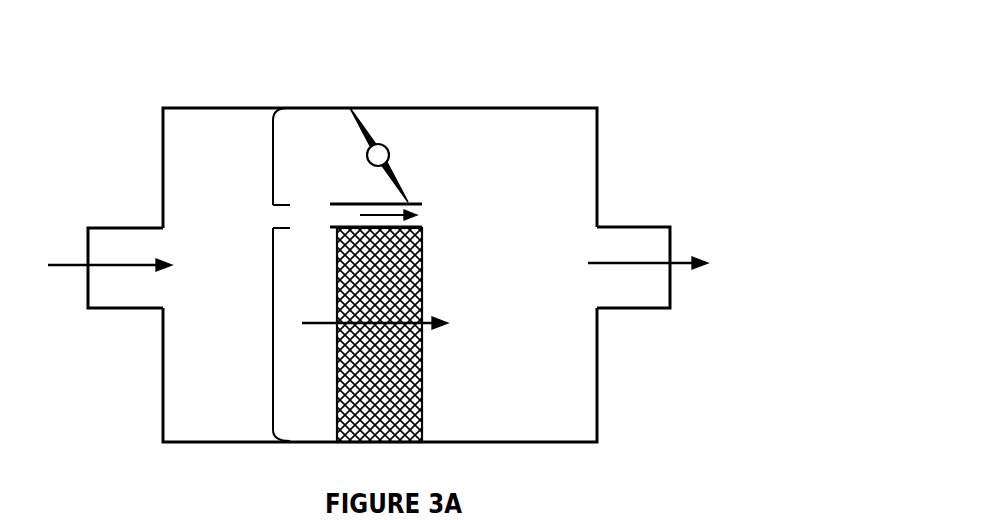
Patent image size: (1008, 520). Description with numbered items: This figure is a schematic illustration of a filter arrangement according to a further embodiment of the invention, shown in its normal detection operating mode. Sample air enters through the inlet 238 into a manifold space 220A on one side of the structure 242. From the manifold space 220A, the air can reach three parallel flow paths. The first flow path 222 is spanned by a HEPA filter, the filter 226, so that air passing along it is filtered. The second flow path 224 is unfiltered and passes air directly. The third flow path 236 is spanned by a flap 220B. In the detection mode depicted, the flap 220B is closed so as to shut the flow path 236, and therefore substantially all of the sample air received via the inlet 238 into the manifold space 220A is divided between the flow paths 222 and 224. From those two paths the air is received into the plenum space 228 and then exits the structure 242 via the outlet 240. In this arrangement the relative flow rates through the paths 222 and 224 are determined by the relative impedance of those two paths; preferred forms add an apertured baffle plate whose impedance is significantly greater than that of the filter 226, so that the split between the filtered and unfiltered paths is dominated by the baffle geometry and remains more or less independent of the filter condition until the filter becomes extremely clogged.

The manifold space 220A is at (250, 277).
The flap 220B is at (373, 128).
The flow path 222 is at (273, 335).
The flow path 224 is at (273, 210).
The filter 226 is at (405, 428).
The plenum space 228 is at (480, 267).
The flow path 236 is at (273, 147).
The inlet 238 is at (118, 312).
The outlet 240 is at (645, 310).
The structure 242 is at (557, 80).